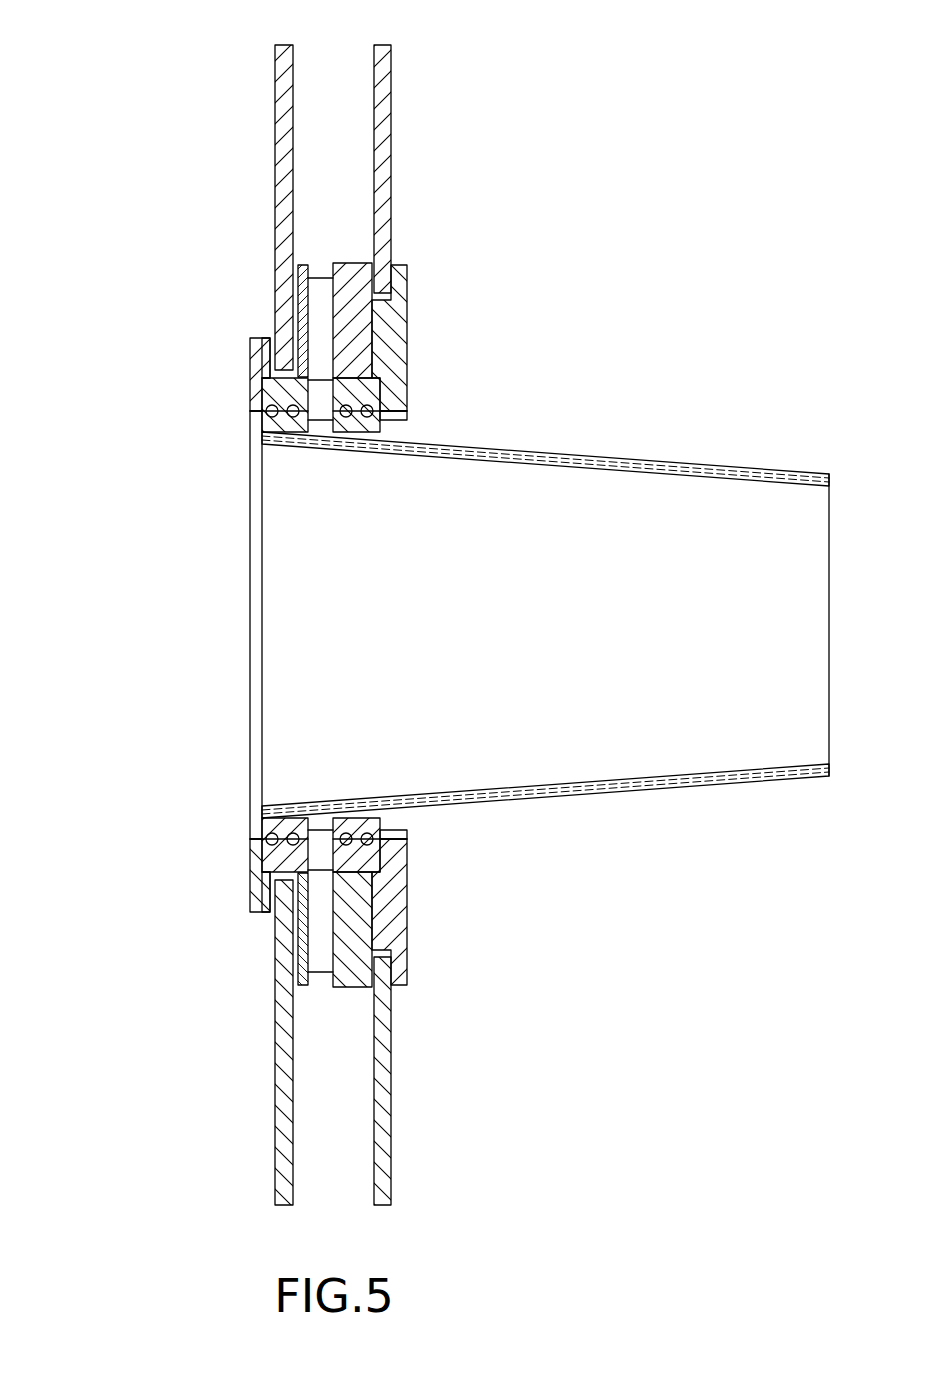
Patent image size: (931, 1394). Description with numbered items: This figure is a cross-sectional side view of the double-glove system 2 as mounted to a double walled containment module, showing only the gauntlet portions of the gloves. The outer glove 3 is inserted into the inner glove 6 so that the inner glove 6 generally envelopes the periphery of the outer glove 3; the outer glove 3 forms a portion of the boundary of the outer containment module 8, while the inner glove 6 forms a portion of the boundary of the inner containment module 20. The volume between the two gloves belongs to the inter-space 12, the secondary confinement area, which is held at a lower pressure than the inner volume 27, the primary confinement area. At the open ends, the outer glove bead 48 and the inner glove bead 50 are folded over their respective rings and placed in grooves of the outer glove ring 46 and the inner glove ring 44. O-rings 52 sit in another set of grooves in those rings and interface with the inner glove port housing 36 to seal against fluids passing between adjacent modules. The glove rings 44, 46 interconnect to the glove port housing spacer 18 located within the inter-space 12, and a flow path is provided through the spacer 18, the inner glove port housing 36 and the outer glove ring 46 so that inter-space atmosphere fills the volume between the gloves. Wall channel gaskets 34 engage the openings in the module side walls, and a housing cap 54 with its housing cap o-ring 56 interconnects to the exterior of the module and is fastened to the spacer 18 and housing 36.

The double-glove system 2 is at (132, 790).
The outer glove 3 is at (333, 440).
The inner glove 6 is at (640, 458).
The outer containment module 8 is at (275, 145).
The inter-space 12 is at (337, 93).
The glove port housing spacer 18 is at (347, 263).
The inner containment module 20 is at (391, 145).
The inner volume 27 is at (634, 909).
The wall channel gasket 34 is at (393, 262).
The inner glove port housing 36 is at (407, 337).
The inner glove ring 44 is at (385, 421).
The outer glove ring 46 is at (255, 428).
The outer glove bead 48 is at (258, 397).
The inner glove bead 50 is at (381, 405).
The o-ring 52 is at (352, 410).
The housing cap 54 is at (250, 363).
The housing cap o-ring 56 is at (257, 382).